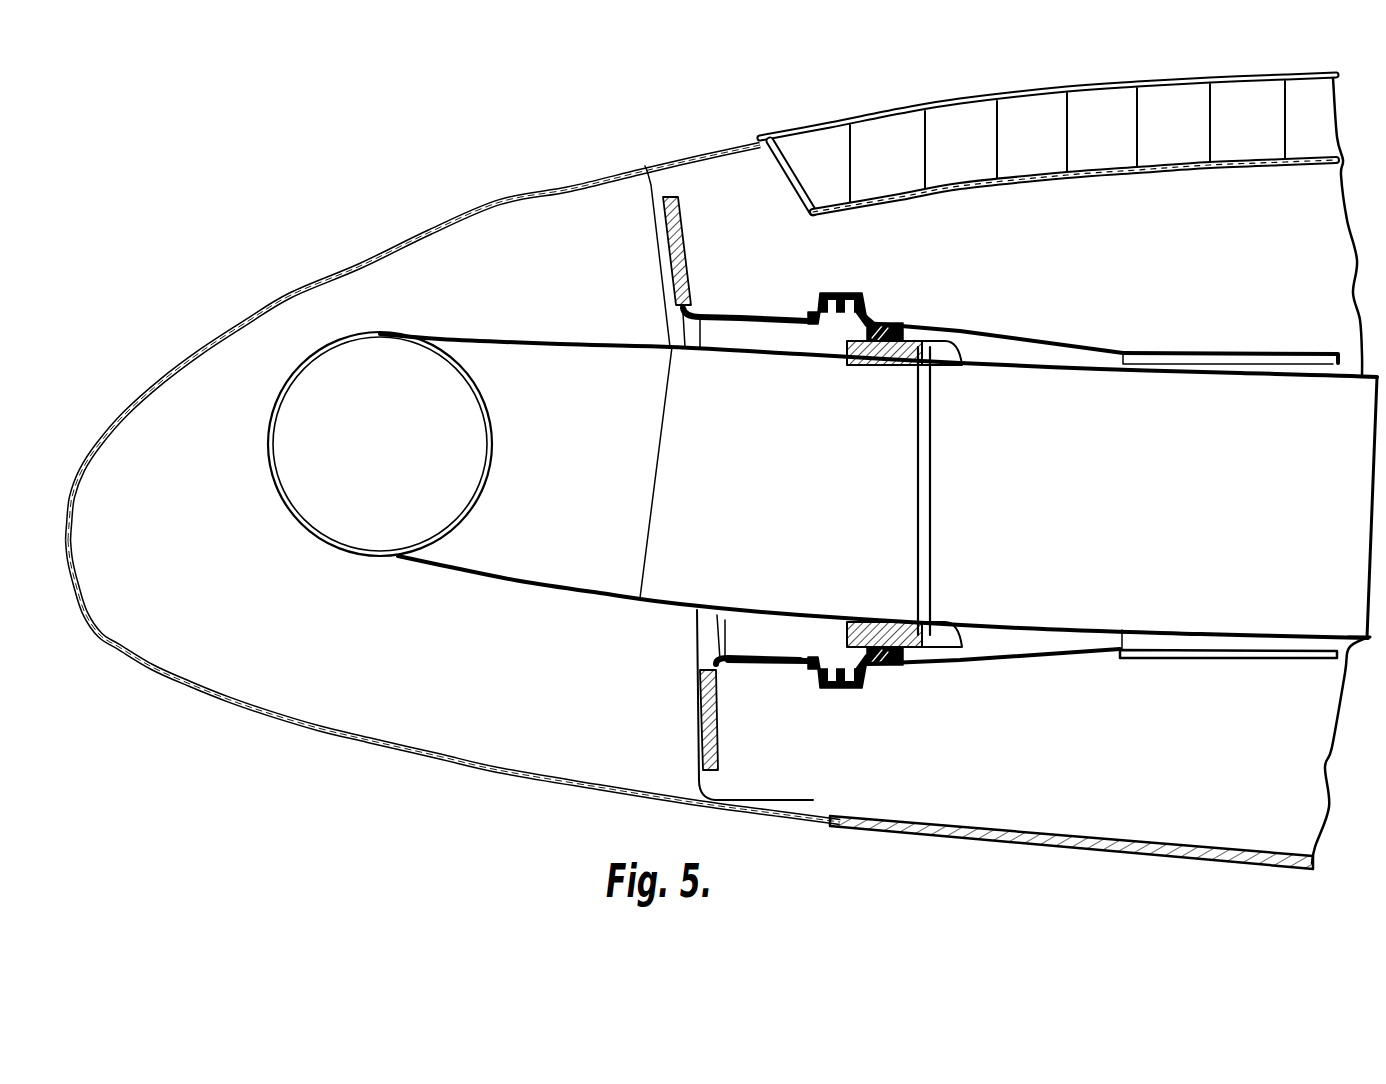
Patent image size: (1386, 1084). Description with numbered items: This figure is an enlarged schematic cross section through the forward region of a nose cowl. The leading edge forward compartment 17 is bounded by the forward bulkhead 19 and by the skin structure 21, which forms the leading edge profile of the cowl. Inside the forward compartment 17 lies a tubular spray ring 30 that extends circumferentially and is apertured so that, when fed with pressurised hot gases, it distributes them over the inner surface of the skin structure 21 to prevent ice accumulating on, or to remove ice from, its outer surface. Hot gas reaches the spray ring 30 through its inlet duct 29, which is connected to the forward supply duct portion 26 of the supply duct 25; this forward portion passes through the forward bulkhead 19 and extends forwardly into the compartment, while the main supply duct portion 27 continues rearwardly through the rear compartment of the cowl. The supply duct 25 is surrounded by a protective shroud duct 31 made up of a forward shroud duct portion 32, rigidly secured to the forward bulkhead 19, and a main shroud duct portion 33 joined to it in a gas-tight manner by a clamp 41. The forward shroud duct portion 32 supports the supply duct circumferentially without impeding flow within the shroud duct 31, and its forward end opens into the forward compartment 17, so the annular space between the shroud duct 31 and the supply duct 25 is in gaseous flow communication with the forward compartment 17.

The leading edge forward compartment 17 is at (157, 447).
The forward bulkhead 19 is at (665, 284).
The skin structure 21 is at (352, 258).
The supply duct 25 is at (1220, 530).
The forward supply duct portion 26 is at (683, 597).
The main supply duct portion 27 is at (1228, 612).
The inlet duct 29 is at (556, 358).
The tubular spray ring 30 is at (285, 506).
The protective shroud duct 31 is at (1213, 347).
The forward shroud duct portion 32 is at (763, 324).
The main shroud duct portion 33 is at (1010, 326).
The clamp 41 is at (863, 308).